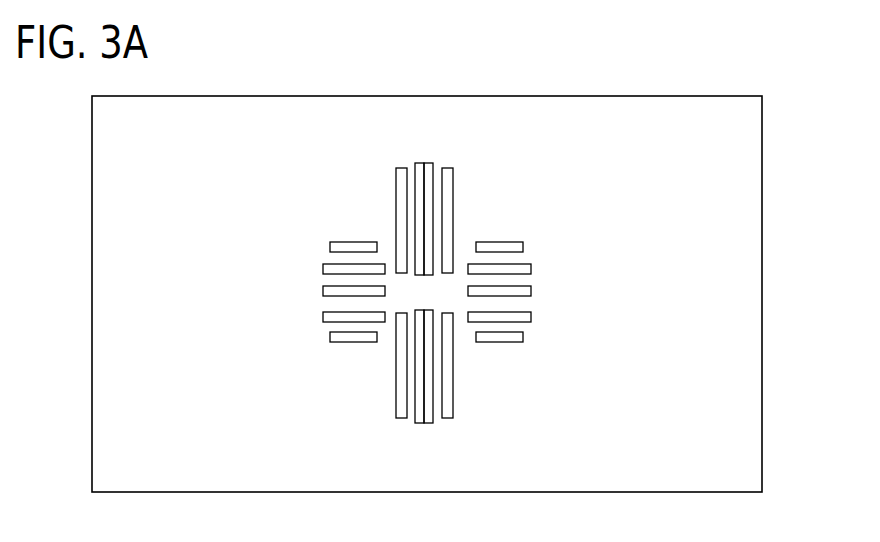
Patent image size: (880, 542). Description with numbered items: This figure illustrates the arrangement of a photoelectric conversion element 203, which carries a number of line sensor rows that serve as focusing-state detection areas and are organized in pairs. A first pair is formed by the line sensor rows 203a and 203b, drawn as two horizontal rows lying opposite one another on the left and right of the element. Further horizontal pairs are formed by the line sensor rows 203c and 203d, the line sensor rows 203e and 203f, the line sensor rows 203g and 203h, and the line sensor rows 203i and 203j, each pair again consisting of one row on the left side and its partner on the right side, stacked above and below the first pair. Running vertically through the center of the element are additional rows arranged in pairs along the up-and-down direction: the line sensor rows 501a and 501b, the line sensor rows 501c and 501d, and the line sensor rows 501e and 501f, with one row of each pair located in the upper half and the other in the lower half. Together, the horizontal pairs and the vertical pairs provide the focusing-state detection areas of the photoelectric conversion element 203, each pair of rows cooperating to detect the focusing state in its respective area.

The photoelectric conversion element 203 is at (763, 244).
The line sensor row 203a is at (323, 291).
The line sensor row 203b is at (531, 291).
The line sensor row 203c is at (323, 268).
The line sensor row 203d is at (531, 270).
The line sensor row 203e is at (330, 246).
The line sensor row 203f is at (523, 246).
The line sensor row 203g is at (323, 317).
The line sensor row 203h is at (531, 317).
The line sensor row 203i is at (330, 337).
The line sensor row 203j is at (523, 337).
The line sensor row 501a is at (401, 167).
The line sensor row 501b is at (401, 419).
The line sensor row 501c is at (424, 162).
The line sensor row 501d is at (424, 424).
The line sensor row 501e is at (447, 167).
The line sensor row 501f is at (447, 419).